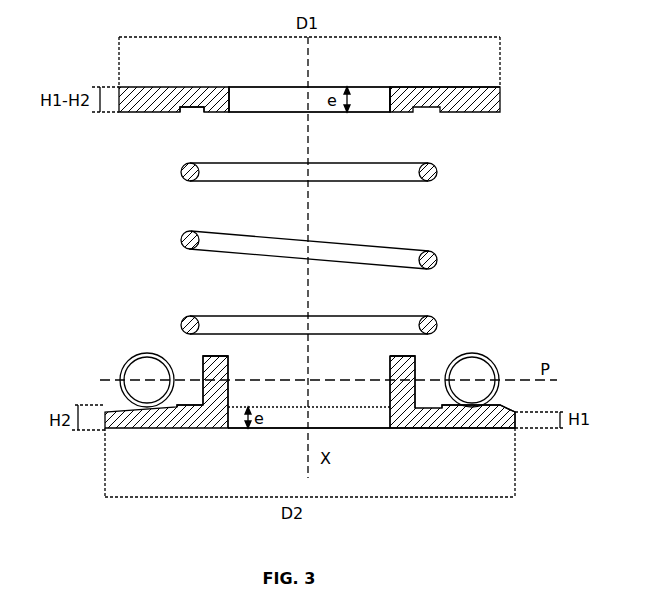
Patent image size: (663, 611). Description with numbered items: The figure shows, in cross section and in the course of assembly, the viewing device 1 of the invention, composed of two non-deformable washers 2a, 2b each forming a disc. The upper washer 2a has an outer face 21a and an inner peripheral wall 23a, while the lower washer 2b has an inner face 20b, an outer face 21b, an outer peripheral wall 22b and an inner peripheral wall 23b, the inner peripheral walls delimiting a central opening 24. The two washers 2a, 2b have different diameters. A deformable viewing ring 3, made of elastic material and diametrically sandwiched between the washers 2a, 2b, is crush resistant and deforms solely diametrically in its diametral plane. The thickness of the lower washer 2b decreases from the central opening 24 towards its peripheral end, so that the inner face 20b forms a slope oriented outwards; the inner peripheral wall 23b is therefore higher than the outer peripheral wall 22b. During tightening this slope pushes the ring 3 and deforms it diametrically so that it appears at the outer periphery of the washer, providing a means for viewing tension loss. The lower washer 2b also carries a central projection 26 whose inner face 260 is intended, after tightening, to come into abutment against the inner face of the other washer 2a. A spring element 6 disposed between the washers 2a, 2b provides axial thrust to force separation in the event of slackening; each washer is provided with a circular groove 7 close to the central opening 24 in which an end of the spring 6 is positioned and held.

The viewing device 1 is at (553, 126).
The non-deformable washer 2a is at (513, 80).
The non-deformable washer 2b is at (85, 450).
The deformable viewing ring 3 is at (130, 356).
The spring element 6 is at (442, 252).
The circular groove 7 is at (190, 115).
The inner face 20b is at (500, 408).
The outer face 21a is at (415, 87).
The outer face 21b is at (460, 431).
The outer peripheral wall 22b is at (515, 418).
The inner peripheral wall 23a is at (390, 100).
The inner peripheral wall 23b is at (389, 429).
The central opening 24 is at (290, 116).
The central projection 26 is at (420, 363).
The inner face of central projection 260 is at (401, 356).